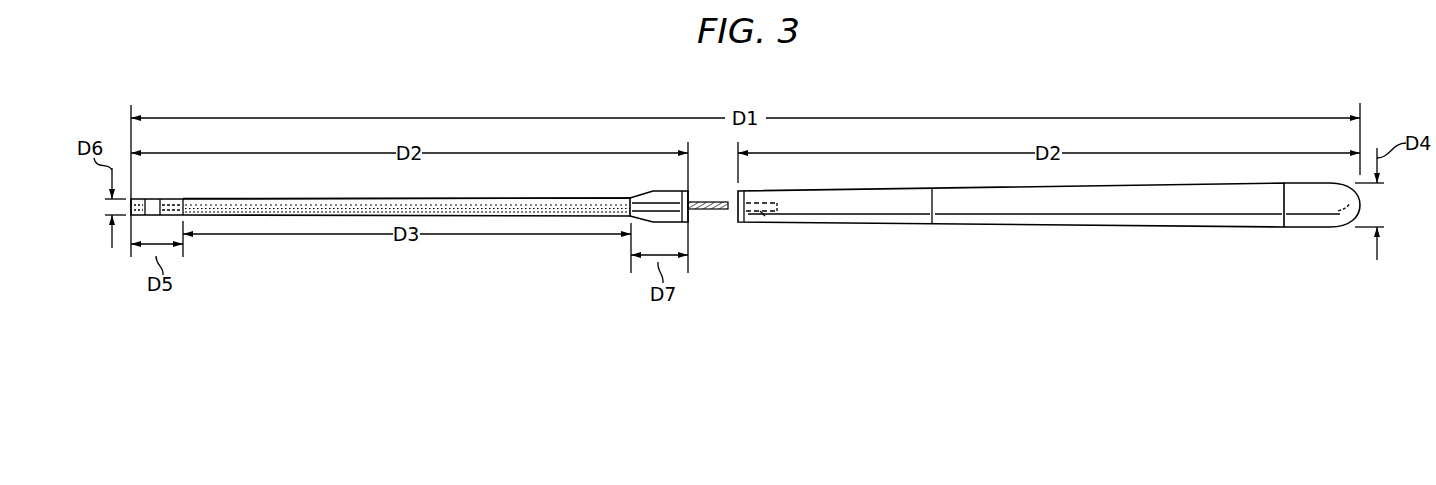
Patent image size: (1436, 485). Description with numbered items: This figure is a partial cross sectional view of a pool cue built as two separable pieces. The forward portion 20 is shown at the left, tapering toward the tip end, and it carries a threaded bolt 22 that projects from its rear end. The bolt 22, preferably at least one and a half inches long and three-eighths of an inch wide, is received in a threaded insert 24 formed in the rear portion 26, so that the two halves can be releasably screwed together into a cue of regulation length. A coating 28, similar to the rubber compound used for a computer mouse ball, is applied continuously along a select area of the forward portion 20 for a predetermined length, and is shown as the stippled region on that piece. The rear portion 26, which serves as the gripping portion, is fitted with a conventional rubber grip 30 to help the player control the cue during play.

The forward portion 20 is at (314, 220).
The threaded bolt 22 is at (704, 212).
The threaded insert 24 is at (770, 223).
The rear portion 26 is at (1068, 232).
The coating 28 is at (262, 205).
The rubber grip 30 is at (1192, 203).